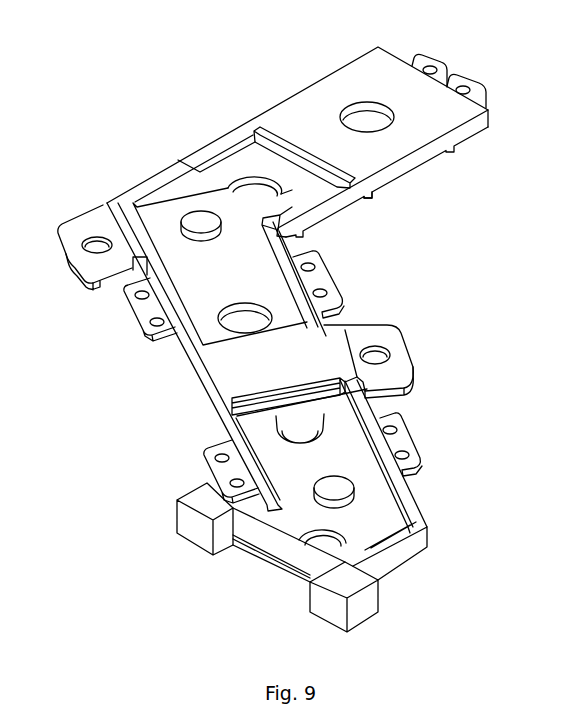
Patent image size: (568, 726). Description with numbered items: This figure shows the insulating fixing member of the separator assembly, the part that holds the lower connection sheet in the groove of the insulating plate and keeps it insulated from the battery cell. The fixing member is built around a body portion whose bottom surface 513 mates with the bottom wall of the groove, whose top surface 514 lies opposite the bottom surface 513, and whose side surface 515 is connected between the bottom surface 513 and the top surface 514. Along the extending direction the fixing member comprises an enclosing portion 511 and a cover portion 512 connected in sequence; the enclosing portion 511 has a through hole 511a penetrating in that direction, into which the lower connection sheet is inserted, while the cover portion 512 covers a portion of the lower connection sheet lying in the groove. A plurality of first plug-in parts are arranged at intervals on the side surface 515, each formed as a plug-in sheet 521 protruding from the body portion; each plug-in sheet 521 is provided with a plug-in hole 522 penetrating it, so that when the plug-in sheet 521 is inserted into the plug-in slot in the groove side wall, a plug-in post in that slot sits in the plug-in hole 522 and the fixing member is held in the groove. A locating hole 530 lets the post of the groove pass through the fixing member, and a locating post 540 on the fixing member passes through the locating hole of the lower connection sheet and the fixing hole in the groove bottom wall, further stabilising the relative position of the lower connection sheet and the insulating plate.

The enclosing portion 511 is at (217, 377).
The through hole 511a is at (262, 408).
The cover portion 512 is at (125, 219).
The bottom surface 513 is at (477, 172).
The top surface 514 is at (388, 35).
The side surface 515 is at (374, 215).
The plug-in sheet 521 is at (319, 280).
The plug-in hole 522 is at (420, 435).
The locating hole 530 is at (350, 95).
The locating post 540 is at (201, 219).